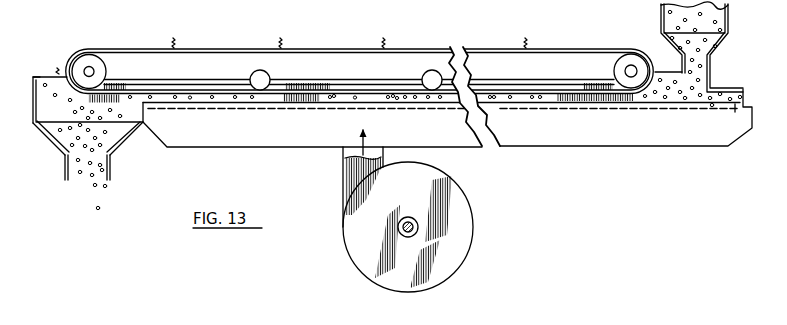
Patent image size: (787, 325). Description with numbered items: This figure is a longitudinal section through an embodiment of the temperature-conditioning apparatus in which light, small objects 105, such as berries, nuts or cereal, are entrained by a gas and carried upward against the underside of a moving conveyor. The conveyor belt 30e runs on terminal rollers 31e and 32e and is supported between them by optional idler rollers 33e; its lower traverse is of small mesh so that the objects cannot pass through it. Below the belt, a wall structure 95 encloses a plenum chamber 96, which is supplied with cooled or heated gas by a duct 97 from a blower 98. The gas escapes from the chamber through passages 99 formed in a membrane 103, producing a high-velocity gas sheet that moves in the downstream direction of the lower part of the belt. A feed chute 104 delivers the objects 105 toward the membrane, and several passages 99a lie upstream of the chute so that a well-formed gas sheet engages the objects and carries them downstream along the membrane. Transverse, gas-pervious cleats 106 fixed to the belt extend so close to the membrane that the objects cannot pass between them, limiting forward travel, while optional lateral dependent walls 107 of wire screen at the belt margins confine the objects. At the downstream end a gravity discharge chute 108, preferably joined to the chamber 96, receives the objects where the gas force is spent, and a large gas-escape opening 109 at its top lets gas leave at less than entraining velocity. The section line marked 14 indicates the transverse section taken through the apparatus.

The conveyor belt 30e is at (145, 50).
The terminal roller 32e is at (105, 72).
The idler roller 33e is at (267, 75).
The lateral dependent wall 107 is at (312, 84).
The terminal roller 31e is at (613, 67).
The gas passage 99 is at (384, 109).
The membrane 103 is at (447, 108).
The plenum chamber 96 is at (327, 136).
The wall structure 95 is at (658, 147).
The upstream gas passages 99a is at (735, 108).
The objects 105 is at (82, 128).
The gravity discharge chute 108 is at (110, 163).
The gas-escape opening 109 is at (44, 64).
The feed chute 104 is at (729, 24).
The gas-pervious cleat 106 is at (646, 50).
The duct 97 is at (343, 171).
The blower 98 is at (473, 229).
The section line 14 is at (227, 87).